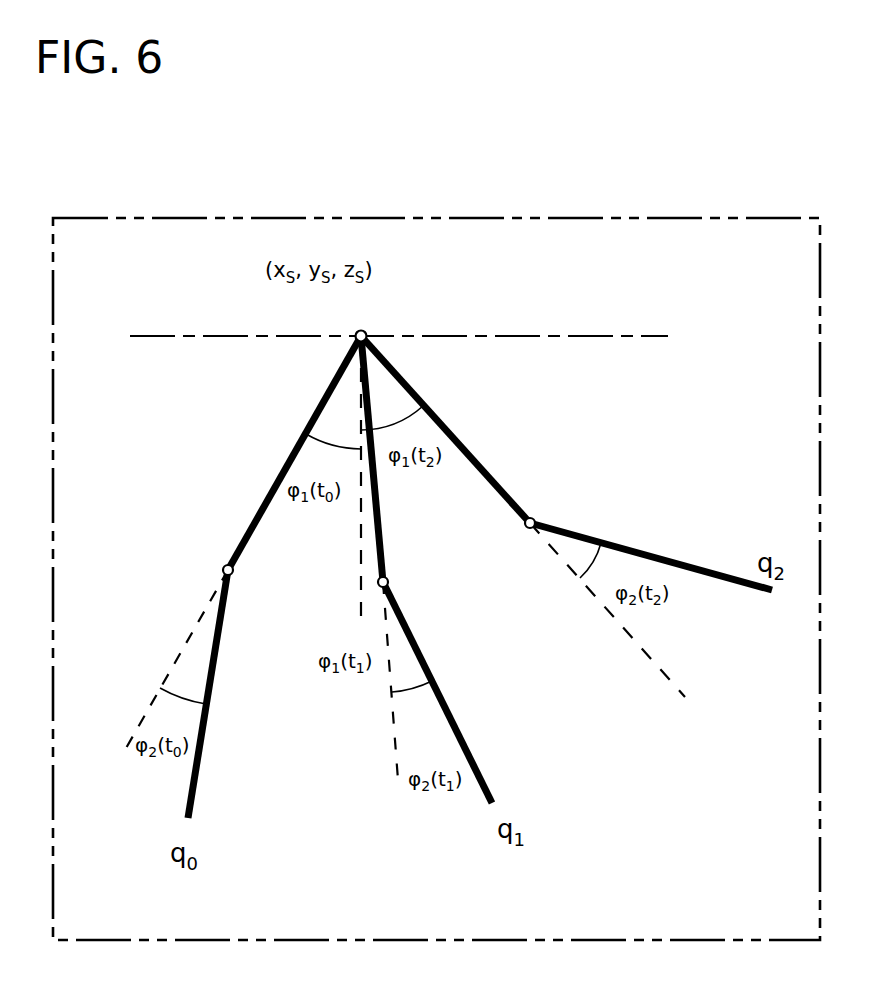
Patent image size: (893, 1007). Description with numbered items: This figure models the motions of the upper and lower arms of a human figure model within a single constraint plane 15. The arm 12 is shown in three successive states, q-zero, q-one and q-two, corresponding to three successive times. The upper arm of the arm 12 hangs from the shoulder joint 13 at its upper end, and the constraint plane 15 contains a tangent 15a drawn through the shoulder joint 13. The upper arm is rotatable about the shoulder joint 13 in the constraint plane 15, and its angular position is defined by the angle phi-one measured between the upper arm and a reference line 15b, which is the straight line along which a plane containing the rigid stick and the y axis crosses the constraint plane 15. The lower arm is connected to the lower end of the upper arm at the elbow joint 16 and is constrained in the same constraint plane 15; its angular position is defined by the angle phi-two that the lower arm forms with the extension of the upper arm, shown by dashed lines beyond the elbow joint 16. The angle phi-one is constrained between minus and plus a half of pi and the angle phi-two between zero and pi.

The arm 12 is at (285, 468).
The shoulder joint 13 is at (360, 330).
The constraint plane 15 is at (367, 942).
The tangent 15a is at (525, 335).
The reference line 15b is at (359, 532).
The elbow joint 16 is at (222, 566).